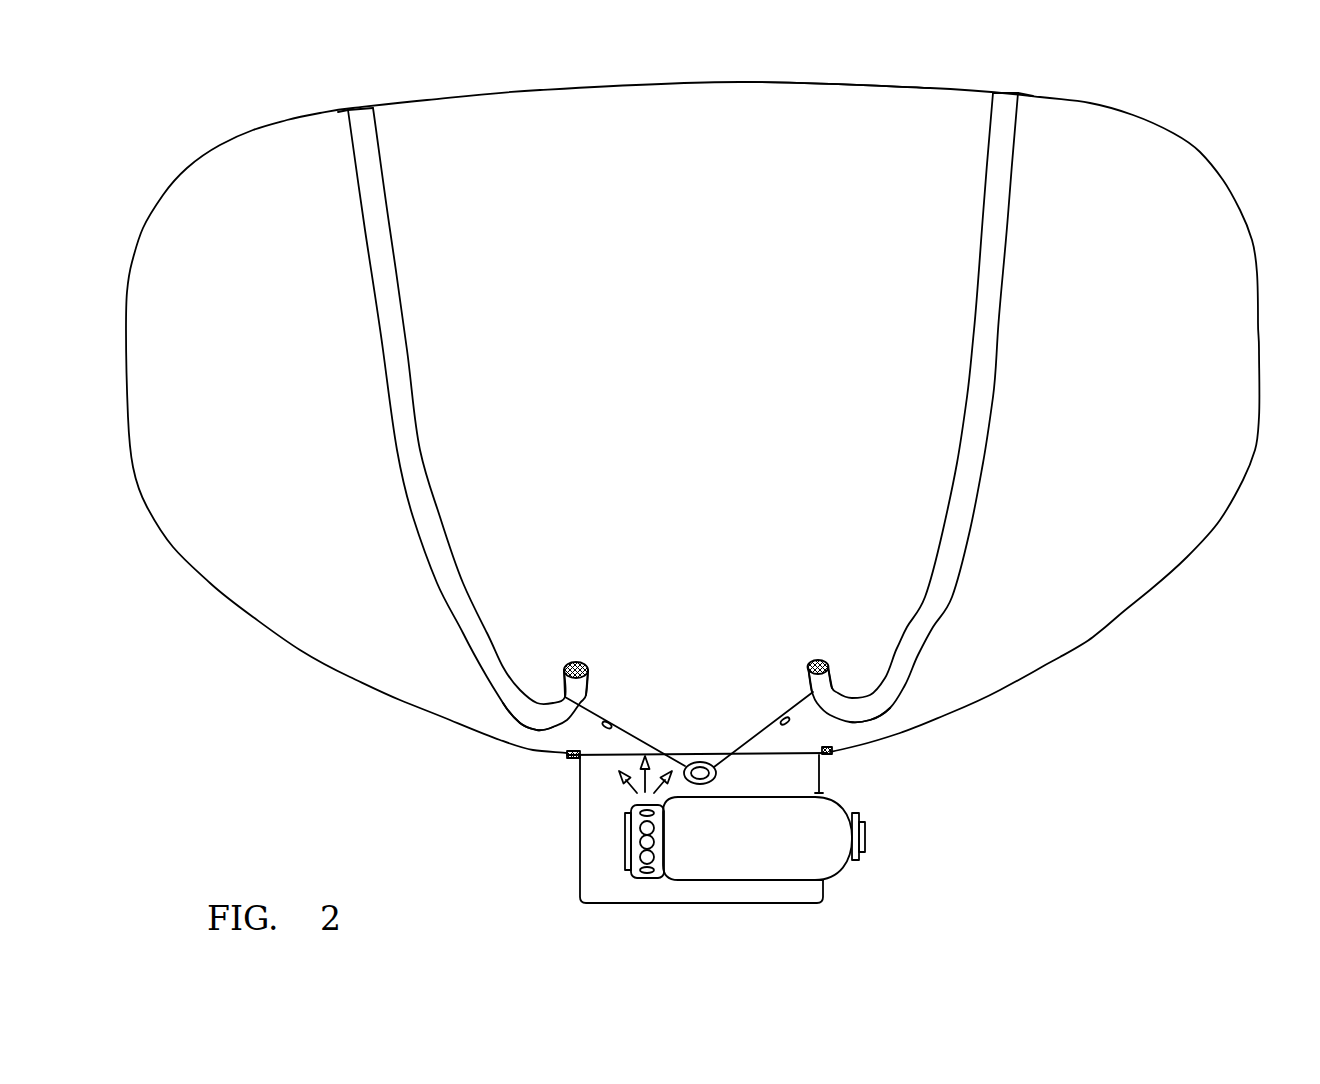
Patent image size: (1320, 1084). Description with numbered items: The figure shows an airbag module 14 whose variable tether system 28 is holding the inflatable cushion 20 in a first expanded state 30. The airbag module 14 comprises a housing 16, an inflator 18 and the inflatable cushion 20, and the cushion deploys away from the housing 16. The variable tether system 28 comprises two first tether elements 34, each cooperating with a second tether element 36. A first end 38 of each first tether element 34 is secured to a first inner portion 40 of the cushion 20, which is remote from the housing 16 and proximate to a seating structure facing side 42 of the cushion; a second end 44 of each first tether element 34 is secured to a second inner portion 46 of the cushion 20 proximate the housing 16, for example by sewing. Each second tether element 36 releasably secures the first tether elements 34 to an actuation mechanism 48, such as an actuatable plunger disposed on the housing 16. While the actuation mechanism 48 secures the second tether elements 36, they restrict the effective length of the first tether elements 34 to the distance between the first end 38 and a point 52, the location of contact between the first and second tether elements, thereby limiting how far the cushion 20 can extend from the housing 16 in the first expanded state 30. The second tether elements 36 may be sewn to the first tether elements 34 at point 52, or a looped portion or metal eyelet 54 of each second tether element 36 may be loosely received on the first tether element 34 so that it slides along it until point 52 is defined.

The airbag module 14 is at (548, 852).
The housing 16 is at (807, 902).
The inflator 18 is at (853, 867).
The inflatable cushion 20 is at (1094, 638).
The variable tether system 28 is at (993, 609).
The first expanded state 30 is at (1203, 138).
The first tether element 34 is at (408, 347).
The second tether element 36 is at (628, 732).
The first end 38 is at (388, 142).
The first inner portion 40 is at (338, 112).
The seating structure facing side 42 is at (812, 82).
The second end 44 is at (588, 690).
The second inner portion 46 is at (579, 662).
The actuation mechanism 48 is at (710, 783).
The point 52 is at (543, 725).
The looped portion or metal eyelet 54 is at (565, 693).